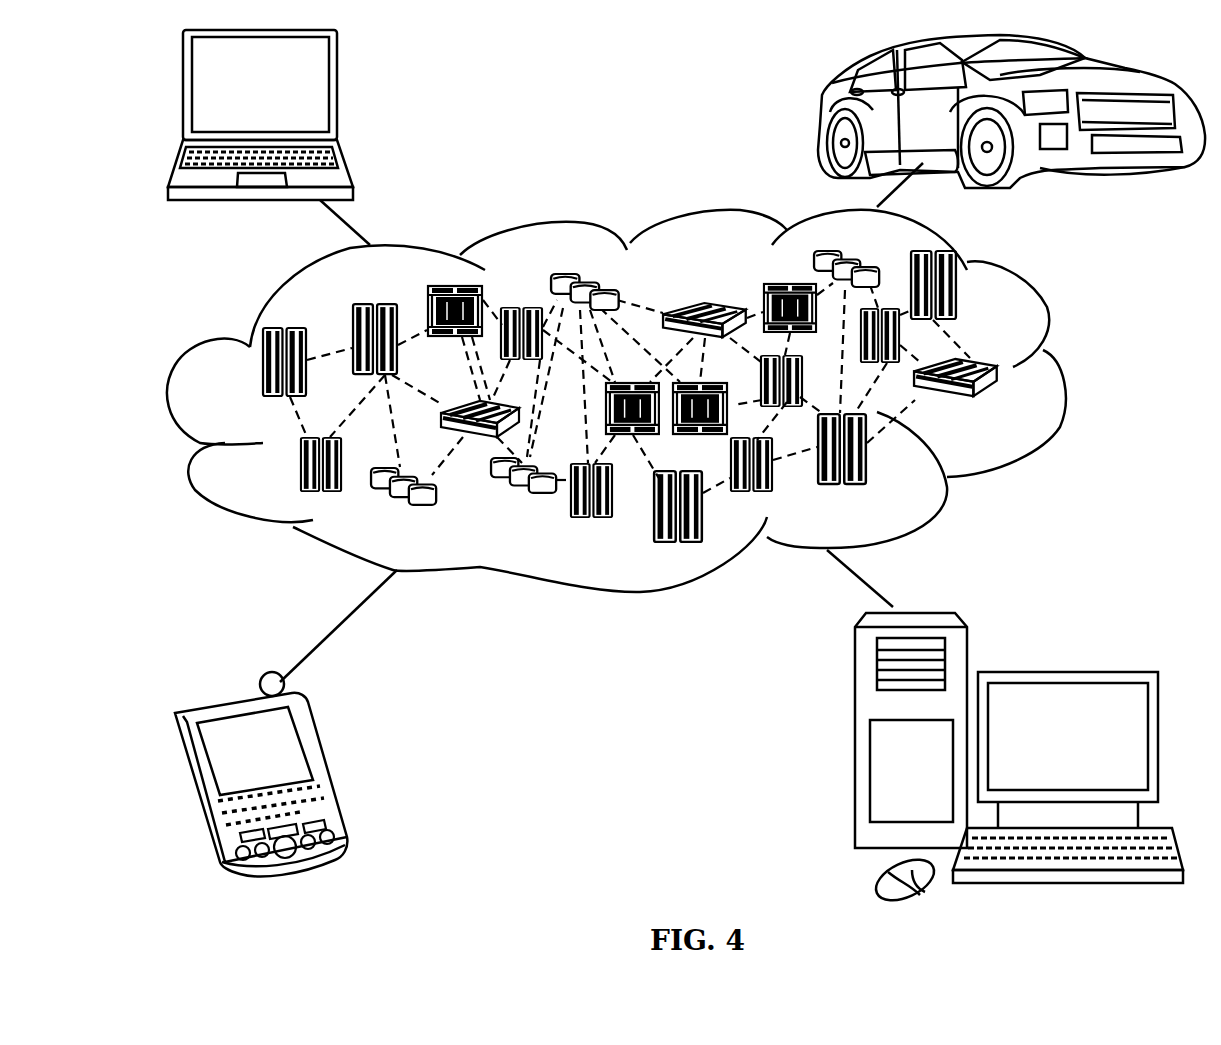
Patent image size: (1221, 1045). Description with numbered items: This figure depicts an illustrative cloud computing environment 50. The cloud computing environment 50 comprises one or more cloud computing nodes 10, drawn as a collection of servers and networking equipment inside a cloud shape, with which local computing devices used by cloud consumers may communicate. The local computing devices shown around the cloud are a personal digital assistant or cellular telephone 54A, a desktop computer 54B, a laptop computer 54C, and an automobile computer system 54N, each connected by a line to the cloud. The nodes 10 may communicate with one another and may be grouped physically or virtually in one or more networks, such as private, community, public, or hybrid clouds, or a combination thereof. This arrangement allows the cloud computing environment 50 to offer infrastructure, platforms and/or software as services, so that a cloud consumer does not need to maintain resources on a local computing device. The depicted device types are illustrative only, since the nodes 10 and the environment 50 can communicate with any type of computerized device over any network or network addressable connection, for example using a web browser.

The cloud computing environment 50 is at (1063, 373).
The cloud computing node 10 is at (1008, 408).
The personal digital assistant or cellular telephone 54A is at (327, 767).
The desktop computer 54B is at (1066, 672).
The laptop computer 54C is at (337, 92).
The automobile computer system 54N is at (820, 108).